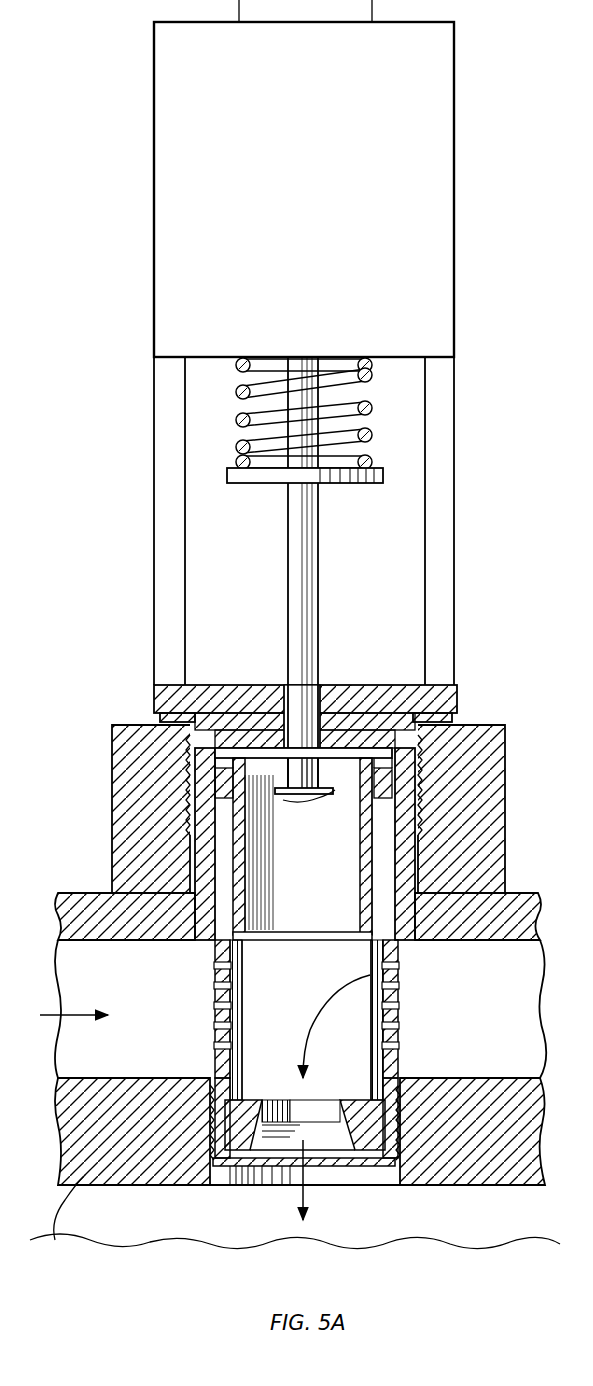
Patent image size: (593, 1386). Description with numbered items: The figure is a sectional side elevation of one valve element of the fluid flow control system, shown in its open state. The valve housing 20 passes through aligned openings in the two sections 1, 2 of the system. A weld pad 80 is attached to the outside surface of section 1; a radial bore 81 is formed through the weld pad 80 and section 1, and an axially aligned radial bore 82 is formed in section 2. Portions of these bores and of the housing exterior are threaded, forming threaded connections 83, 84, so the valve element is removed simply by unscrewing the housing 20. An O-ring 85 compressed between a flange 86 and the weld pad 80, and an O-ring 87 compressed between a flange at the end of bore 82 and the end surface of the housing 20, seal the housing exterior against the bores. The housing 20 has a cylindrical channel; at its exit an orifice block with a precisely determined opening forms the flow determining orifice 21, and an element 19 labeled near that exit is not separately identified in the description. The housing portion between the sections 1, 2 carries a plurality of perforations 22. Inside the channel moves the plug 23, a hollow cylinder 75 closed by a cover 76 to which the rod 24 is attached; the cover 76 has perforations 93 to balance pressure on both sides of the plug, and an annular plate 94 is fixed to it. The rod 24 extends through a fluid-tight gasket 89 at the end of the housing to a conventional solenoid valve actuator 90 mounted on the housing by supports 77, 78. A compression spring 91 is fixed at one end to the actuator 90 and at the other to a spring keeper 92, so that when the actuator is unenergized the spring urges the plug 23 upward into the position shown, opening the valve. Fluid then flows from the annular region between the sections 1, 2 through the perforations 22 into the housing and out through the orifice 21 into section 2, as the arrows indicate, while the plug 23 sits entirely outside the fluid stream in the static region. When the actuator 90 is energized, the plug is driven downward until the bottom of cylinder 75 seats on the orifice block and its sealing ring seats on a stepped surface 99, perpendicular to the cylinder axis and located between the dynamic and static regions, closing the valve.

The section 1 is at (60, 893).
The section 2 is at (70, 1190).
The nozzle lip 19 is at (262, 1140).
The housing 20 is at (195, 855).
The flow determining orifice 21 is at (318, 1115).
The perforations 22 is at (215, 1045).
The plug 23 is at (358, 848).
The rod 24 is at (288, 545).
The hollow cylinder 75 is at (395, 862).
The cover 76 is at (258, 760).
The support 77 is at (157, 572).
The support 78 is at (457, 540).
The weld pad 80 is at (470, 730).
The radial bore 81 is at (215, 948).
The radial bore 82 is at (215, 1078).
The threaded connection 83 is at (425, 765).
The threaded connection 84 is at (405, 1125).
The O-ring 85 is at (165, 716).
The flange 86 is at (445, 715).
The O-ring 87 is at (372, 1166).
The fluid-tight gasket 89 is at (324, 705).
The solenoid valve actuator 90 is at (154, 78).
The compression spring 91 is at (372, 465).
The spring keeper 92 is at (240, 483).
The perforations 93 is at (280, 808).
The annular plate 94 is at (222, 768).
The stepped surface 99 is at (370, 915).